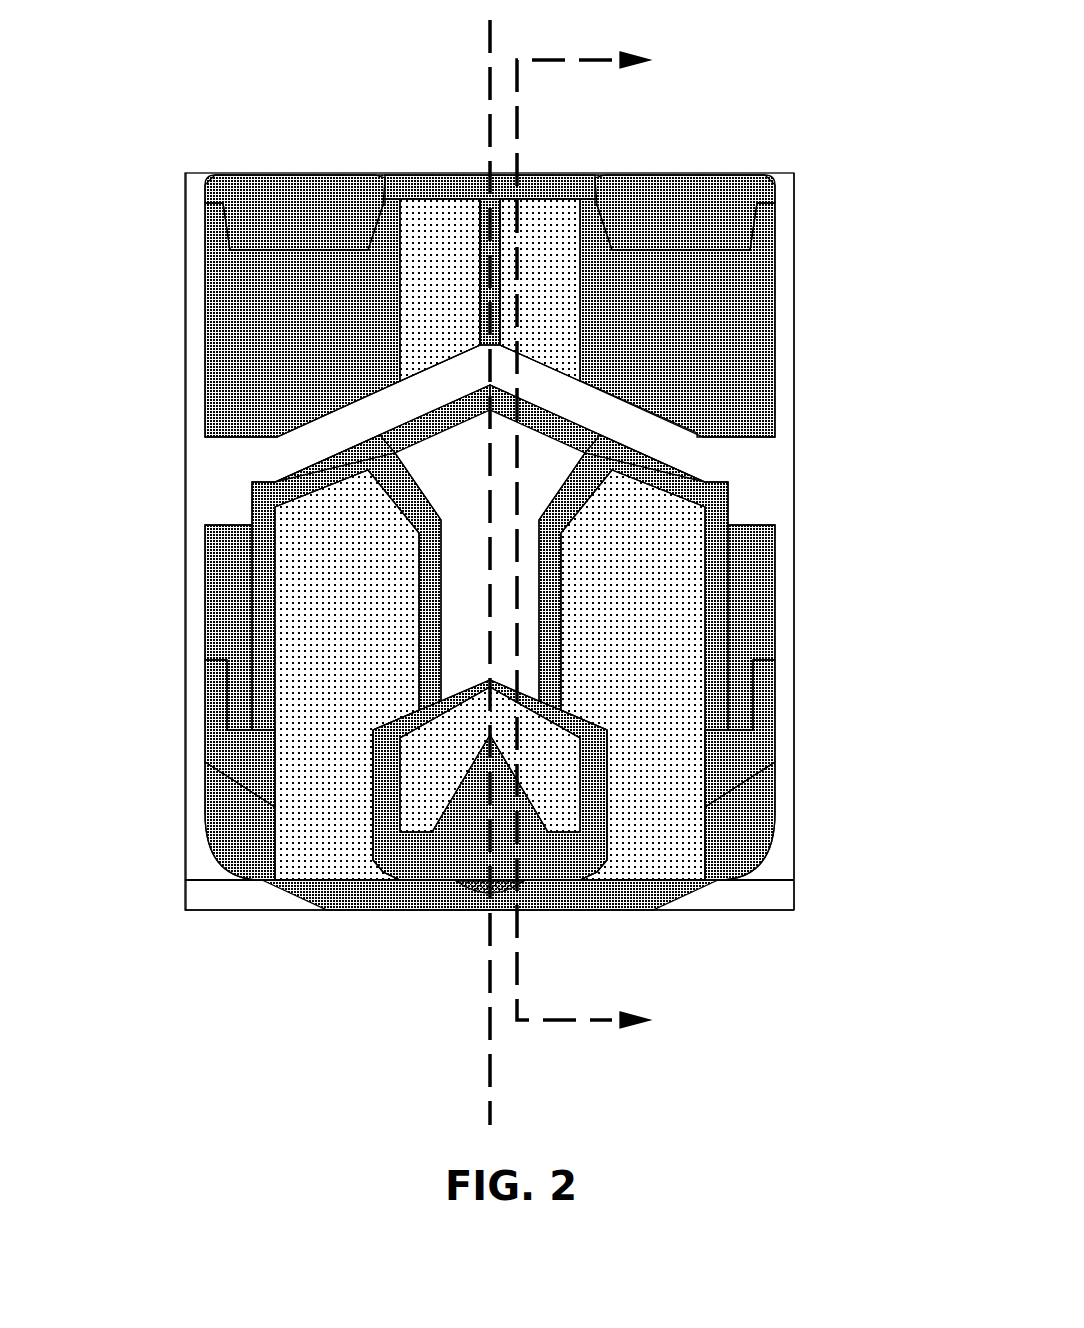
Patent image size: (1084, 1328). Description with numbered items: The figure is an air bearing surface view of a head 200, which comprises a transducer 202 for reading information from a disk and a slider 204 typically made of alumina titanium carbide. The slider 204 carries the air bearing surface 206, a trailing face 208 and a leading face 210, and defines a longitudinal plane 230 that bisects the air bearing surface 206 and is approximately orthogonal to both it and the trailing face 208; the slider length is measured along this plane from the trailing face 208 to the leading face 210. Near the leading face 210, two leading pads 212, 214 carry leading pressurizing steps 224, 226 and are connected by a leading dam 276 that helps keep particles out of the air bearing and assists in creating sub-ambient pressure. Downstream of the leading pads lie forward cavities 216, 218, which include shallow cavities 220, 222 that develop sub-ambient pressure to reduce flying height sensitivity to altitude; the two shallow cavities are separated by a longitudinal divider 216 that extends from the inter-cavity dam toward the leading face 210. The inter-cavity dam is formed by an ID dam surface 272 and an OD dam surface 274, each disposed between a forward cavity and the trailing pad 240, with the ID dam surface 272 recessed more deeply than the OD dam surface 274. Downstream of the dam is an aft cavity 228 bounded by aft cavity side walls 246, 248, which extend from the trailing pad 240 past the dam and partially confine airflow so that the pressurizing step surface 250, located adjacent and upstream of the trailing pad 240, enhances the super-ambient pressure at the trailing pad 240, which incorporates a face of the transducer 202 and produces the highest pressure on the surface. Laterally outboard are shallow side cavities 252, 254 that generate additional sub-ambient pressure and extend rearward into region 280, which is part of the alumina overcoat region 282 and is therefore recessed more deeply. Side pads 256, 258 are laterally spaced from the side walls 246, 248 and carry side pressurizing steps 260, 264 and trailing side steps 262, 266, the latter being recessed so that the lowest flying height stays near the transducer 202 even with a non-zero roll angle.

The head 200 is at (780, 108).
The transducer 202 is at (486, 896).
The slider 204 is at (185, 502).
The air bearing surface 206 is at (794, 275).
The trailing face 208 is at (243, 912).
The leading face 210 is at (360, 173).
The leading pad 212 is at (333, 339).
The leading pad 214 is at (698, 339).
The forward cavity / longitudinal divider 216 is at (488, 258).
The forward cavity 218 is at (678, 445).
The shallow cavity 220 is at (463, 281).
The shallow cavity 222 is at (568, 281).
The leading pressurizing step 224 is at (313, 224).
The leading pressurizing step 226 is at (698, 224).
The aft cavity 228 is at (481, 490).
The longitudinal plane 230 is at (488, 37).
The trailing pad 240 is at (481, 861).
The aft cavity side wall 246 is at (433, 627).
The aft cavity side wall 248 is at (553, 650).
The pressurizing step surface 250 is at (471, 756).
The shallow side cavity 252 is at (363, 586).
The shallow side cavity 254 is at (658, 586).
The side pad 256 is at (263, 764).
The side pad 258 is at (763, 764).
The side pressurizing step 260 is at (223, 553).
The trailing side step 262 is at (237, 843).
The side pressurizing step 264 is at (757, 577).
The trailing side step 266 is at (757, 787).
The ID dam surface 272 is at (420, 428).
The OD dam surface 274 is at (560, 428).
The leading dam 276 is at (560, 193).
The region 280 is at (327, 895).
The region 282 is at (203, 890).